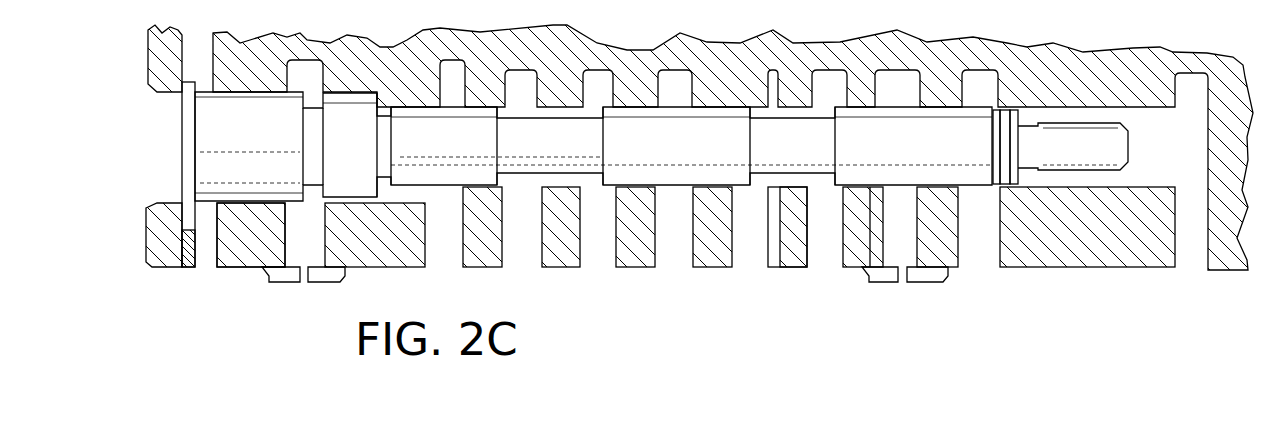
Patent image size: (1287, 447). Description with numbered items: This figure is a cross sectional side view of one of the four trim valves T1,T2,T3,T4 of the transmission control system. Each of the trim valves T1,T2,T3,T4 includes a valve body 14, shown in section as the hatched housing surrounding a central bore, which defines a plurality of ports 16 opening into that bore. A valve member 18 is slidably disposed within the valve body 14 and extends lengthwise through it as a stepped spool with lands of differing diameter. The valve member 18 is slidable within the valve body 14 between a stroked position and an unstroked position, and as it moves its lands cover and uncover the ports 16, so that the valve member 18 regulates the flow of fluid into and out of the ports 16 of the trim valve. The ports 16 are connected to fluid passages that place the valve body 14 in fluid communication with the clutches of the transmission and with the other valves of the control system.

The valve body 14 is at (1073, 253).
The ports 16 is at (599, 247).
The valve member 18 is at (903, 187).
The trim valves T1,T2,T3,T4 is at (237, 272).